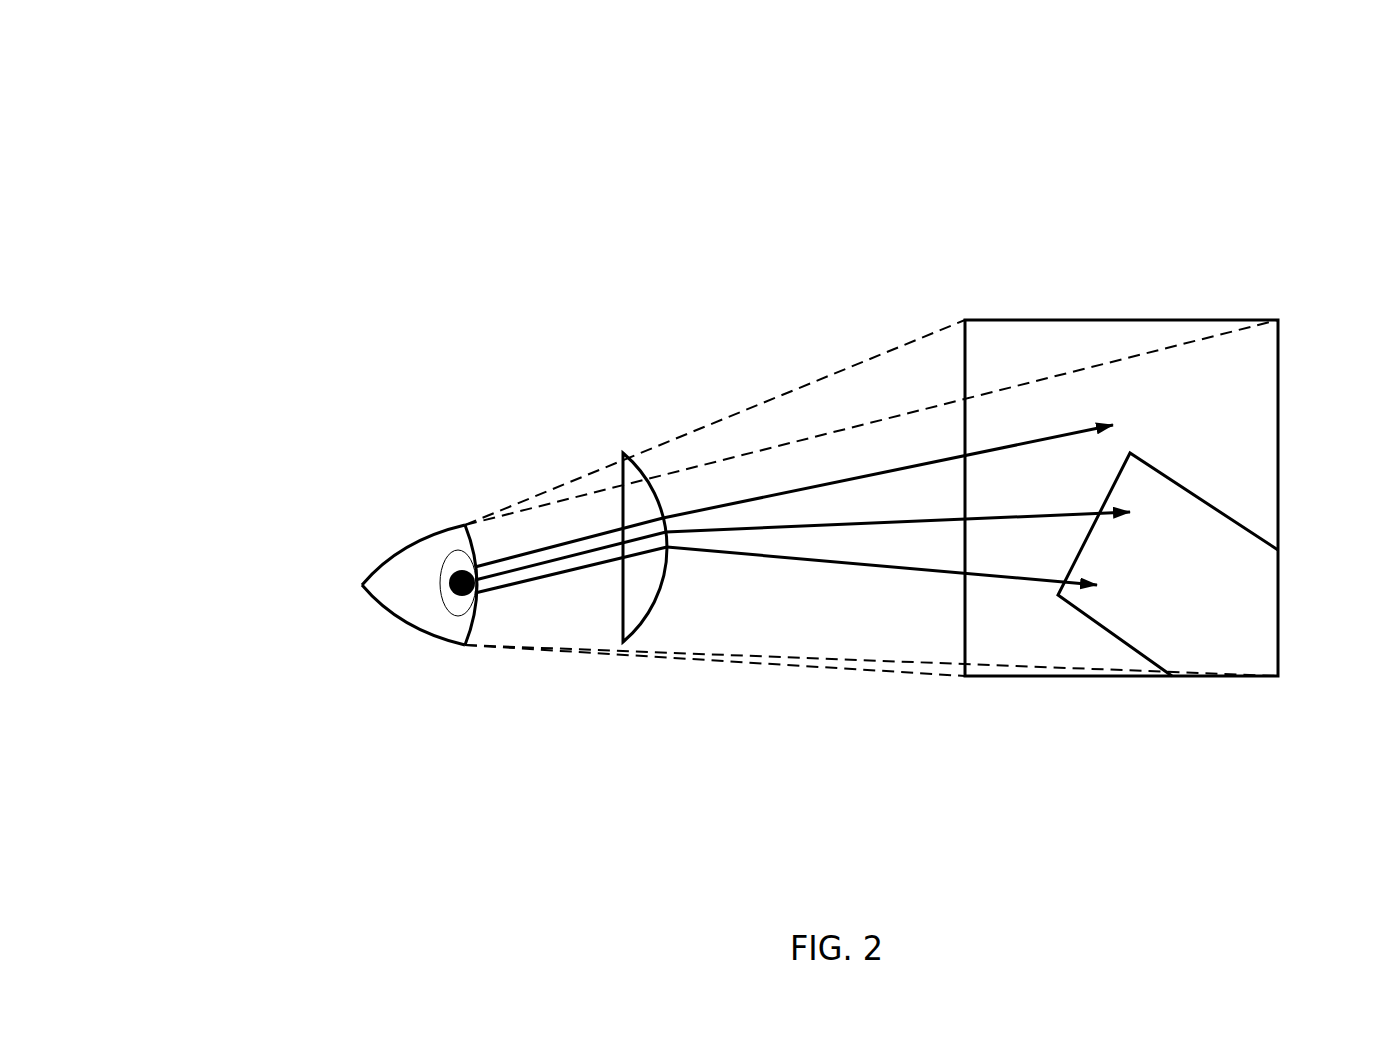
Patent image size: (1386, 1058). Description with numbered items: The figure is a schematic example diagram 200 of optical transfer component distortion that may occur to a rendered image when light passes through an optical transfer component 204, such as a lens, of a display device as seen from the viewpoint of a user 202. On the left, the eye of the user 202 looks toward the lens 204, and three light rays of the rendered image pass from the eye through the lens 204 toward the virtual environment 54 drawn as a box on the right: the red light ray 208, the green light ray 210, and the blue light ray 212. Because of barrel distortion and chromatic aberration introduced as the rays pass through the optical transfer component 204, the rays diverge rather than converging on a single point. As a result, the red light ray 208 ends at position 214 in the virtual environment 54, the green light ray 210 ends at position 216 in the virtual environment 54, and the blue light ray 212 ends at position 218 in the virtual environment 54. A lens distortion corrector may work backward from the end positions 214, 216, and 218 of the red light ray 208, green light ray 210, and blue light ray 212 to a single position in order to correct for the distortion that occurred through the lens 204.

The diagram 200 is at (243, 88).
The user 202 is at (423, 613).
The optical transfer component 204 is at (653, 612).
The virtual environment 54 is at (1007, 318).
The red light ray 208 is at (797, 490).
The green light ray 210 is at (885, 523).
The blue light ray 212 is at (795, 558).
The position 214 is at (1115, 423).
The position 216 is at (1130, 512).
The position 218 is at (1097, 585).